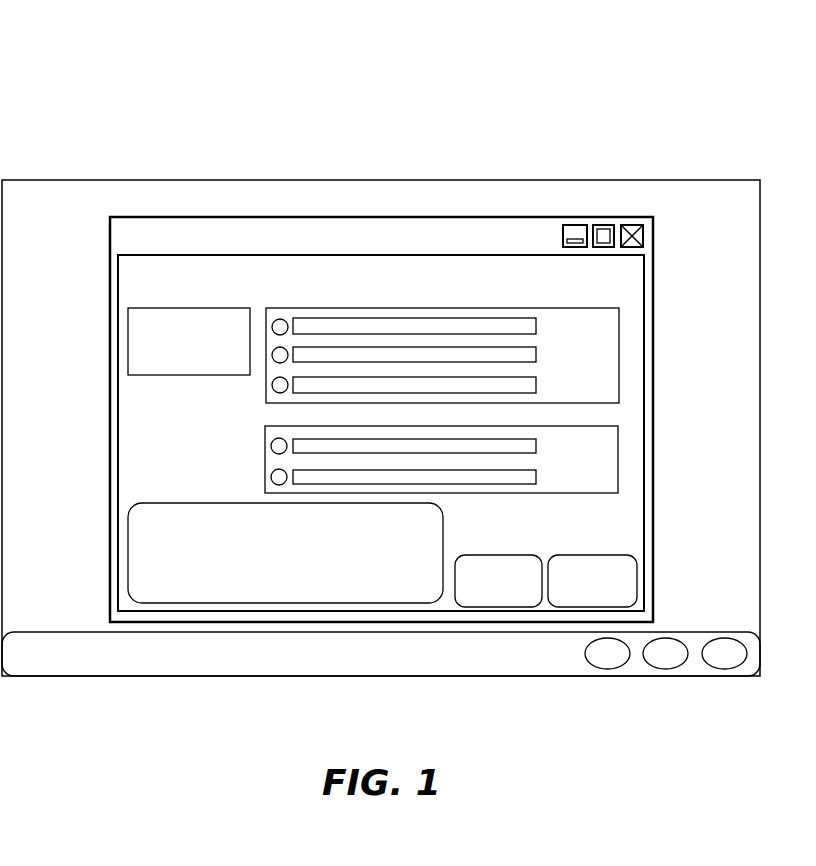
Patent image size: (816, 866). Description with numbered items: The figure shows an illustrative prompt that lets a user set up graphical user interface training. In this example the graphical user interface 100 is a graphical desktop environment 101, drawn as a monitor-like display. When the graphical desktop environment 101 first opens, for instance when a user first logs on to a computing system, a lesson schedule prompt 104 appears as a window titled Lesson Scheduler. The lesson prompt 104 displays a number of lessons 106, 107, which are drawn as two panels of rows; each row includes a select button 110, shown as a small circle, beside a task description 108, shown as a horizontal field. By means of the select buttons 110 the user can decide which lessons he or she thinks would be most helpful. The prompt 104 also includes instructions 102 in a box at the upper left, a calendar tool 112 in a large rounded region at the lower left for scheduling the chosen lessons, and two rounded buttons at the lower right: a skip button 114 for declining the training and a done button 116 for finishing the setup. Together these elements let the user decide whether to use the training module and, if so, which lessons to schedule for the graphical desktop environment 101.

The graphical user interface 100 is at (184, 108).
The graphical desktop environment 101 is at (76, 210).
The instructions 102 is at (189, 341).
The lesson schedule prompt 104 is at (458, 230).
The lesson 106 is at (464, 312).
The lesson 107 is at (605, 453).
The task description 108 is at (381, 327).
The select button 110 is at (272, 383).
The calendar tool 112 is at (285, 553).
The skip button 114 is at (498, 581).
The done button 116 is at (592, 581).